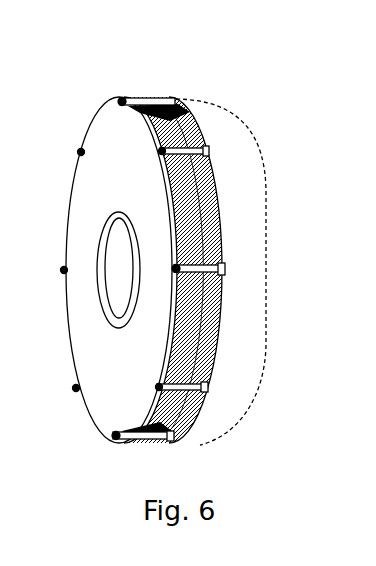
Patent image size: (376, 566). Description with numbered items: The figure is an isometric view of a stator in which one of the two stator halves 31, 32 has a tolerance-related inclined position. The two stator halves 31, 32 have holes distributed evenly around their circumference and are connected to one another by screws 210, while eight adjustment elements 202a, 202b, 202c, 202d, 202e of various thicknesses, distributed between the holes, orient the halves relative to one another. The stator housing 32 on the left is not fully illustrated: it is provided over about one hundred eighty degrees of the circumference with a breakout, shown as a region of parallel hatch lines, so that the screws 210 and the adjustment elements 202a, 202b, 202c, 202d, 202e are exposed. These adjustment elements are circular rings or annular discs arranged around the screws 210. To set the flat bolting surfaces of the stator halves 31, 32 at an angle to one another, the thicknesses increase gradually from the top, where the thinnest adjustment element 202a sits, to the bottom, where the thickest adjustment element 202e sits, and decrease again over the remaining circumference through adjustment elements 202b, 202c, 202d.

The stator half 31 is at (248, 222).
The stator housing 32 is at (92, 208).
The screws 210 is at (203, 137).
The adjustment element 202a is at (188, 101).
The adjustment element 202b is at (209, 151).
The adjustment element 202c is at (225, 268).
The adjustment element 202d is at (208, 388).
The adjustment element 202e is at (176, 440).